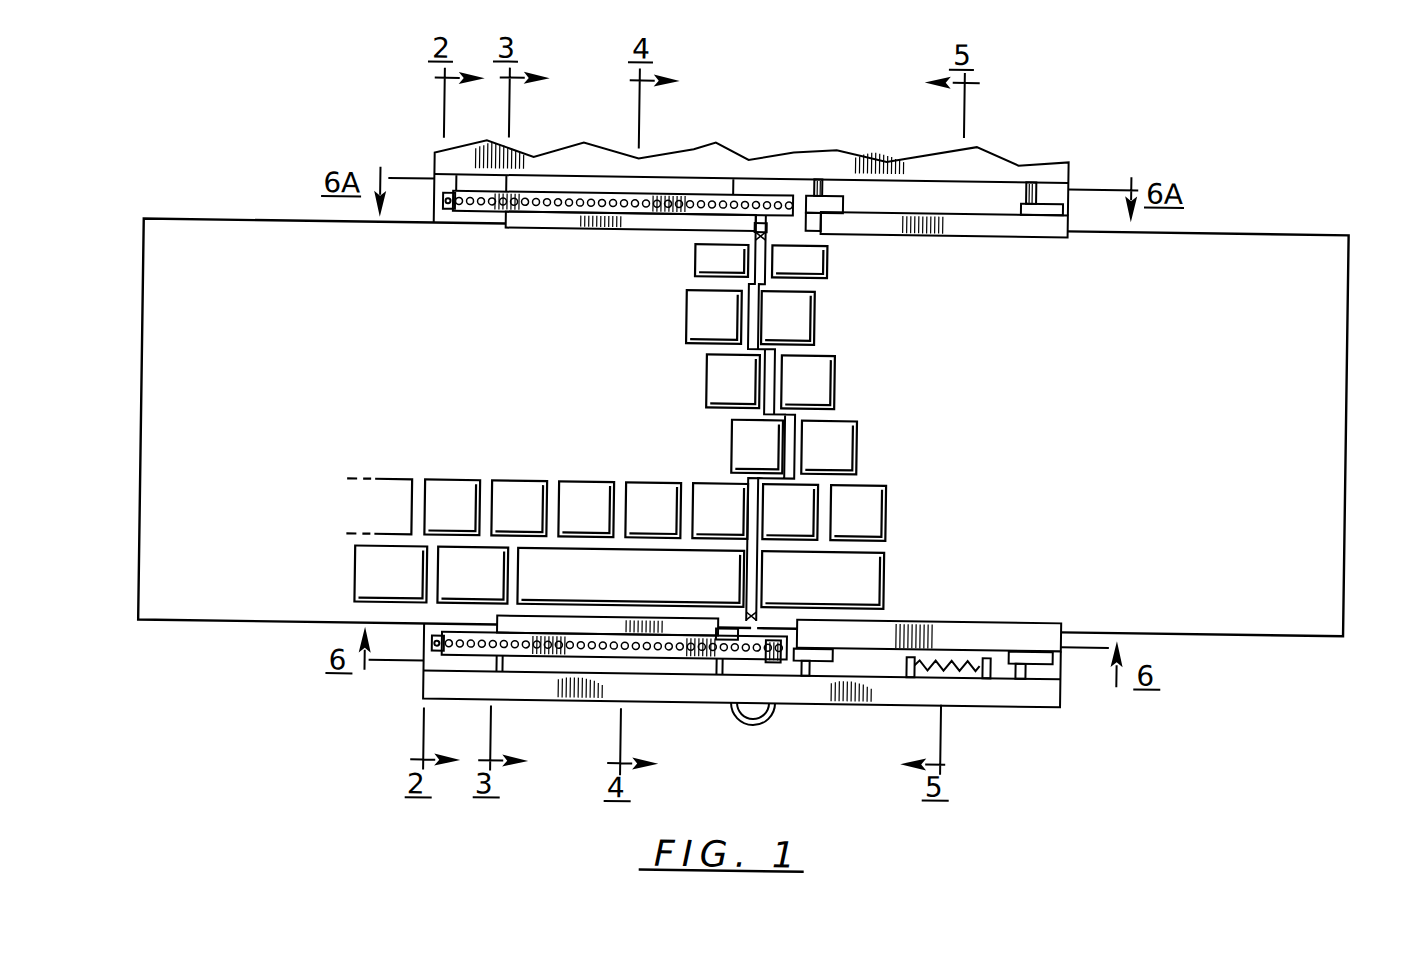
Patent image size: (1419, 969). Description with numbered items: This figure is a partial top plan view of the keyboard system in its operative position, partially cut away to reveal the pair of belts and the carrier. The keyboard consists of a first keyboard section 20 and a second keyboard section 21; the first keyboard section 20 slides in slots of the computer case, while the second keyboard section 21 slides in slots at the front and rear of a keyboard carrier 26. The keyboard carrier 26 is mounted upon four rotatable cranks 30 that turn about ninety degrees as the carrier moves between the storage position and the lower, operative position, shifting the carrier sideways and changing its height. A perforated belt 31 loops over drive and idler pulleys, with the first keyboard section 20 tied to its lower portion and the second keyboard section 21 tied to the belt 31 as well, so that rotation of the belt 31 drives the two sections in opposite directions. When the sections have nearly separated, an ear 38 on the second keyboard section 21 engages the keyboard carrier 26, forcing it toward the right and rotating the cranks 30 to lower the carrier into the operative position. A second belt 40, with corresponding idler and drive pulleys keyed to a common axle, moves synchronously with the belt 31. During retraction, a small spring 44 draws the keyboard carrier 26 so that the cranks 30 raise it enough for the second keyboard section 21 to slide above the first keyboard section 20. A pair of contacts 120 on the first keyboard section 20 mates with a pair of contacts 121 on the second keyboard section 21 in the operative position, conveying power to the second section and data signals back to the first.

The first keyboard section 20 is at (166, 439).
The second keyboard section 21 is at (1312, 440).
The keyboard carrier 26 is at (978, 217).
The rotatable cranks 30 is at (833, 201).
The belt 31 is at (635, 196).
The ear 38 is at (808, 229).
The second belt 40 is at (585, 652).
The spring 44 is at (958, 664).
The contacts 120 is at (758, 215).
The contacts 121 is at (761, 226).